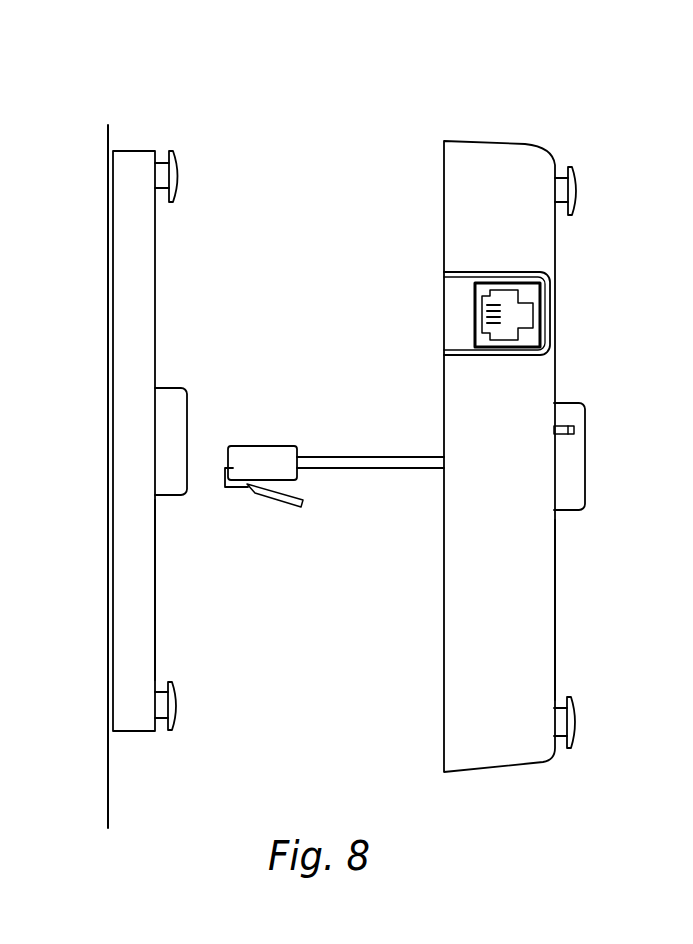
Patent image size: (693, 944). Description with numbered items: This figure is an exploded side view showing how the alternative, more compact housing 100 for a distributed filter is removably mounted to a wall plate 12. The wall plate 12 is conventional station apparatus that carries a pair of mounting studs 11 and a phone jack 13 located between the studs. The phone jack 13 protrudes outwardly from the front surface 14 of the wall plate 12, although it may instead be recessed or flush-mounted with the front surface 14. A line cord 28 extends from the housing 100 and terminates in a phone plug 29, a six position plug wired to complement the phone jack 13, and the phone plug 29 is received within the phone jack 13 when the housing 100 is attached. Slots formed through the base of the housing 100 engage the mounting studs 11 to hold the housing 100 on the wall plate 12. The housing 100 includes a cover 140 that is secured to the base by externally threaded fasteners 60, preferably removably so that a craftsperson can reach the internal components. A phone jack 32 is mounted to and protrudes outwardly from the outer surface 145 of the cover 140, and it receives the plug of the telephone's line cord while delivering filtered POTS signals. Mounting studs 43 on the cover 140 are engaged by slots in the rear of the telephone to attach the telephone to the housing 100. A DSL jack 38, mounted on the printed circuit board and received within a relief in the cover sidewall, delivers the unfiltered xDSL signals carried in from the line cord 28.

The housing 100 is at (516, 100).
The mounting studs 11 is at (181, 165).
The wall plate 12 is at (139, 150).
The phone jack 13 is at (173, 387).
The front surface 14 is at (156, 573).
The line cord 28 is at (370, 470).
The phone plug 29 is at (267, 455).
The phone jack 32 is at (586, 455).
The DSL jack 38 is at (517, 320).
The mounting studs 43 is at (569, 165).
The fasteners 60 is at (580, 186).
The cover 140 is at (493, 747).
The outer surface 145 is at (556, 580).